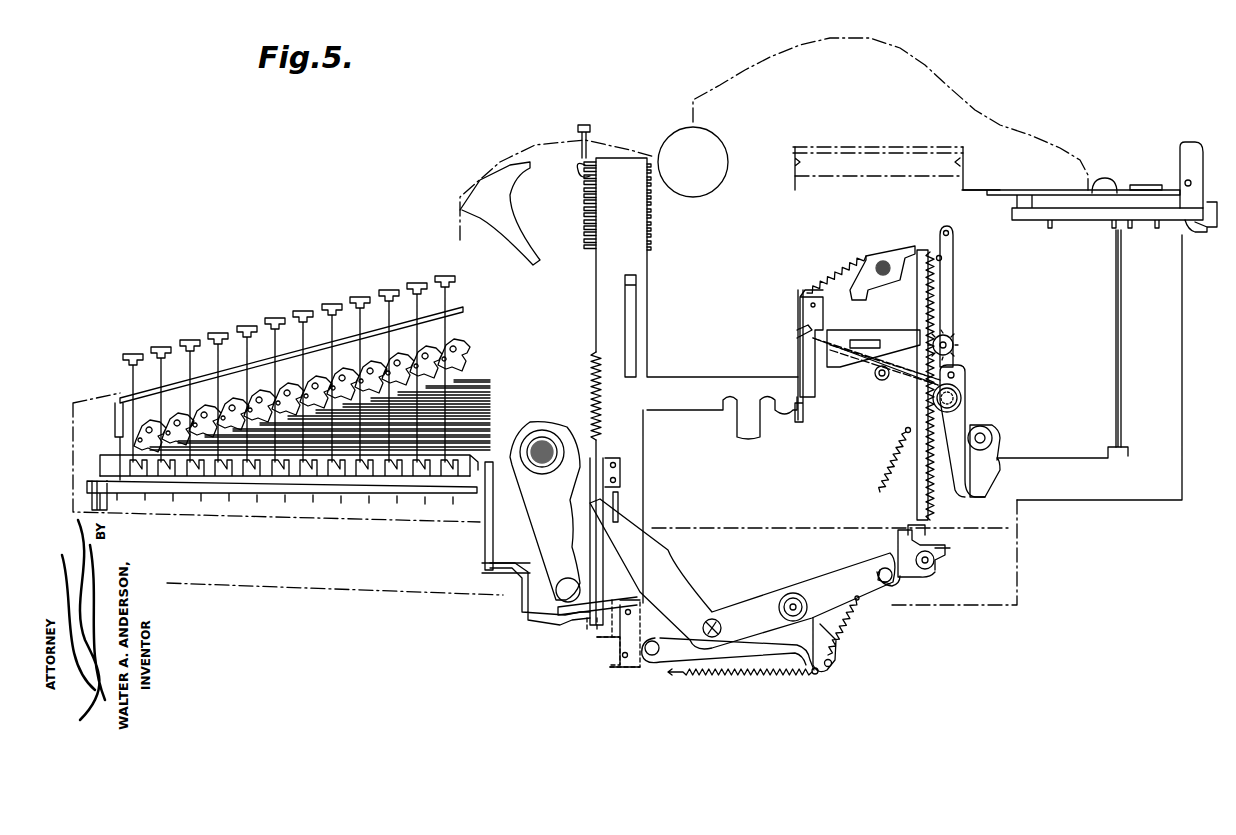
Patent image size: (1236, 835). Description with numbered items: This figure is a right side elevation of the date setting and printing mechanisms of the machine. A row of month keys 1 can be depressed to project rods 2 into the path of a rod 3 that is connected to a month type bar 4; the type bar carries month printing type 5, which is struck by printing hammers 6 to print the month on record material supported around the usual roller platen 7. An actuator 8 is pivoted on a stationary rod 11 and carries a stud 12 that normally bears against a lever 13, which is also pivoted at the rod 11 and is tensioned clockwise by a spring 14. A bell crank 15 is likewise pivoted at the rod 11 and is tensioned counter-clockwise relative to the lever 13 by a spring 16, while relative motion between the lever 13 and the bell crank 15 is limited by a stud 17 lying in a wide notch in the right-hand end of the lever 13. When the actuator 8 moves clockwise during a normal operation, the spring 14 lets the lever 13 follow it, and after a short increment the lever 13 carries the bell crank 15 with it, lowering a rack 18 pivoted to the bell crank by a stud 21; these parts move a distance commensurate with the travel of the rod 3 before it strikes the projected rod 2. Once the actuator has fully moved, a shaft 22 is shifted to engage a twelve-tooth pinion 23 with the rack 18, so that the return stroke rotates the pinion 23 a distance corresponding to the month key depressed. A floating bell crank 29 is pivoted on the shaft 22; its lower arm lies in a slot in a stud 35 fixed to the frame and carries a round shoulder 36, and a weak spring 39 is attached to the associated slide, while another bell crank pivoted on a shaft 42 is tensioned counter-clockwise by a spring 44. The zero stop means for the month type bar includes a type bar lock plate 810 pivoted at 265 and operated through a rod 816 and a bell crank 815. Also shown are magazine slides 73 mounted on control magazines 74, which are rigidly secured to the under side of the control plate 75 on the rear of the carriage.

The month keys 1 is at (265, 325).
The rods 2 is at (492, 393).
The rod 3 is at (500, 496).
The month type bar 4 is at (596, 335).
The month printing type 5 is at (585, 165).
The printing hammers 6 is at (510, 222).
The roller platen 7 is at (710, 152).
The actuator 8 is at (763, 604).
The stationary rod 11 is at (795, 598).
The stud 12 is at (712, 618).
The lever 13 is at (752, 645).
The spring 14 is at (733, 676).
The bell crank 15 is at (897, 583).
The spring 16 is at (853, 618).
The stud 17 is at (880, 568).
The rack 18 is at (940, 462).
The stud 21 is at (940, 565).
The shaft 22 is at (952, 342).
The pinion 23 is at (955, 345).
The floating bell crank 29 is at (953, 300).
The stud 35 is at (878, 380).
The round shoulder 36 is at (812, 358).
The weak spring 39 is at (888, 462).
The shaft 42 is at (888, 262).
The spring 44 is at (848, 258).
The magazine slides 73 is at (1195, 240).
The control magazines 74 is at (1085, 222).
The control plate 75 is at (1108, 180).
The pivot 265 is at (815, 300).
The type bar lock plate 810 is at (810, 372).
The bell crank 815 is at (992, 432).
The rod 816 is at (1121, 370).